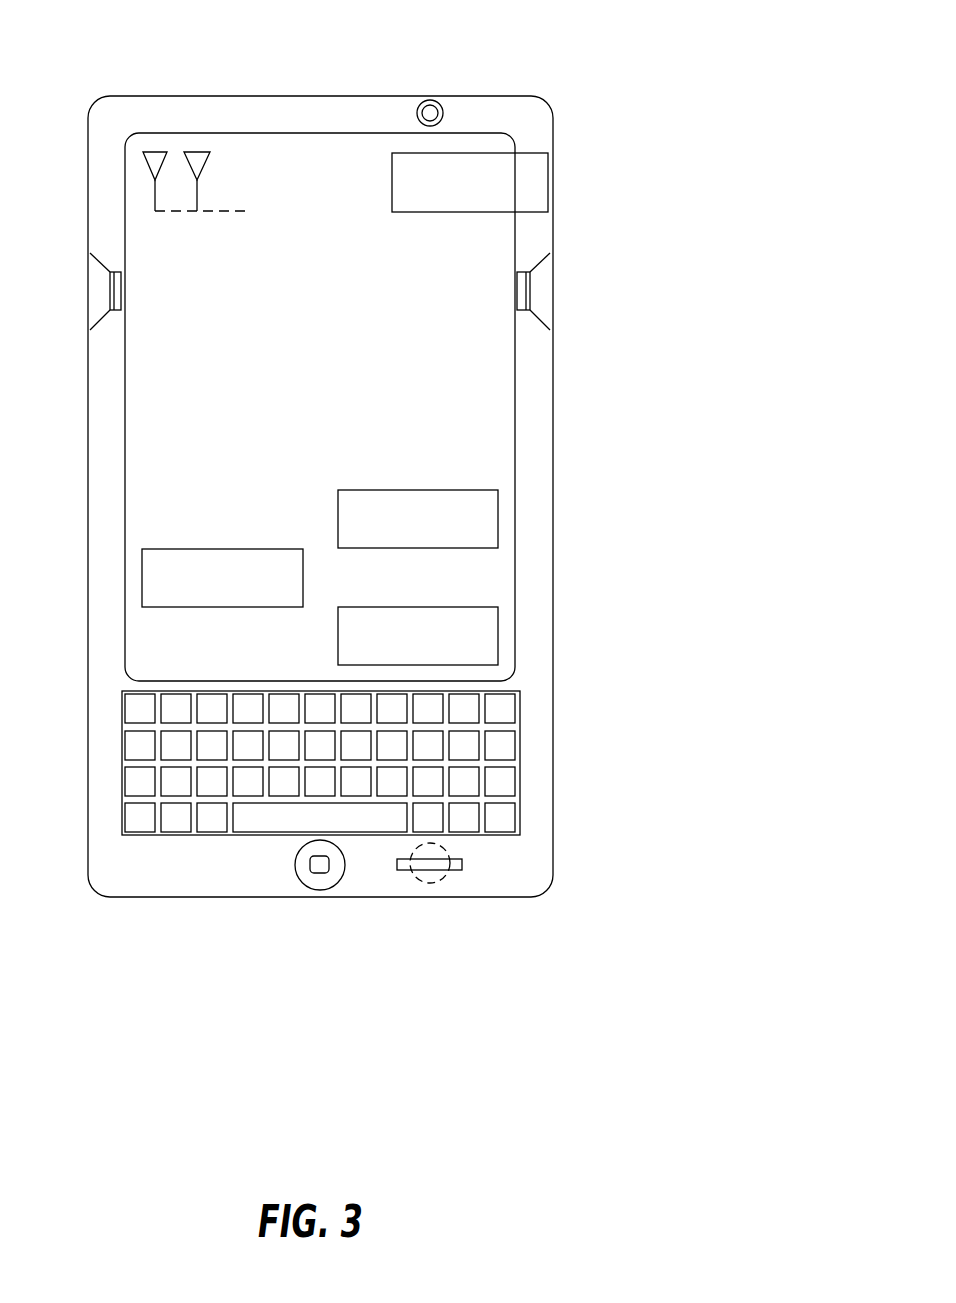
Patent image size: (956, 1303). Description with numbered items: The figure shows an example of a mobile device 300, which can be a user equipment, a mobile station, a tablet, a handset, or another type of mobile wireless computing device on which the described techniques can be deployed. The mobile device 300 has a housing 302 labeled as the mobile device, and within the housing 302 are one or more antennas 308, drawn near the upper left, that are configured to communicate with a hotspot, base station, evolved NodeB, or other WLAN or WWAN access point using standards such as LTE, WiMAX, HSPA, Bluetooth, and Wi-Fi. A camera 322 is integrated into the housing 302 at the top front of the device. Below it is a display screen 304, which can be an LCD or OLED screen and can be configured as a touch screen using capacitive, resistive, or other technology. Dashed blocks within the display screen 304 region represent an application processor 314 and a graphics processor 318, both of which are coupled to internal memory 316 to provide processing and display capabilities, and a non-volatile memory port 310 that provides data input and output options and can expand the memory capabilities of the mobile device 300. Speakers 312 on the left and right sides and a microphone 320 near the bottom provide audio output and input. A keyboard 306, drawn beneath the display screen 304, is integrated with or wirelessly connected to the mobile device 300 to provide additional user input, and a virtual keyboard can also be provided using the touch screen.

The mobile device 300 is at (540, 32).
The housing 302 is at (318, 96).
The display screen 304 is at (495, 398).
The keyboard 306 is at (520, 762).
The antennas 308 is at (198, 152).
The non-volatile memory port 310 is at (553, 184).
The speakers 312 is at (106, 291).
The application processor 314 is at (418, 488).
The internal memory 316 is at (418, 606).
The graphics processor 318 is at (222, 548).
The microphone 320 is at (430, 883).
The camera 322 is at (441, 104).